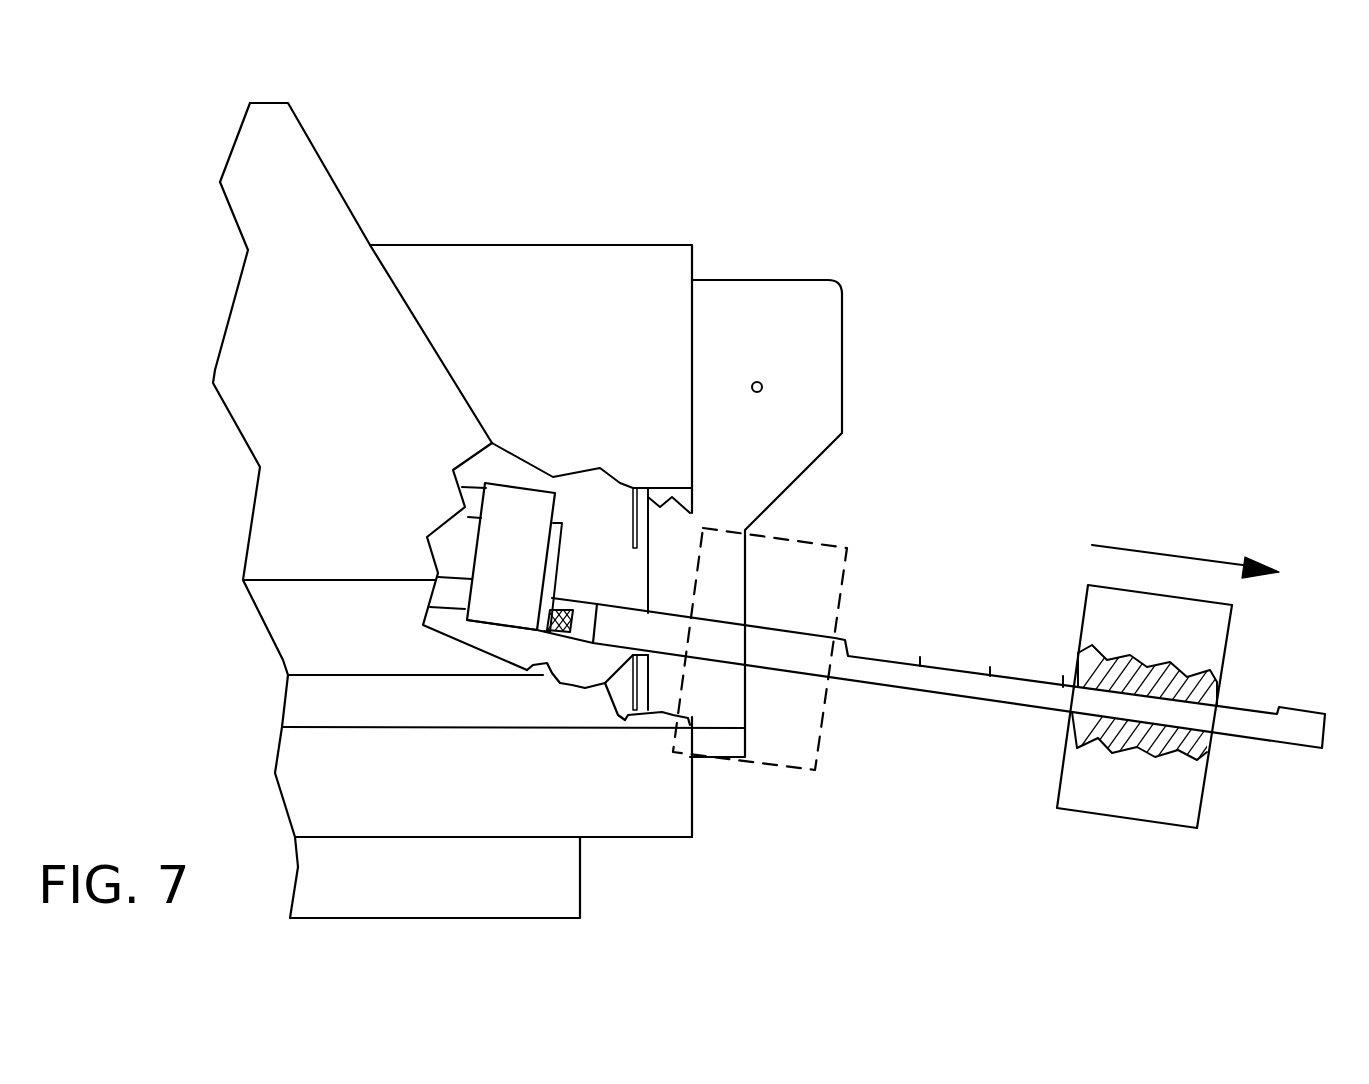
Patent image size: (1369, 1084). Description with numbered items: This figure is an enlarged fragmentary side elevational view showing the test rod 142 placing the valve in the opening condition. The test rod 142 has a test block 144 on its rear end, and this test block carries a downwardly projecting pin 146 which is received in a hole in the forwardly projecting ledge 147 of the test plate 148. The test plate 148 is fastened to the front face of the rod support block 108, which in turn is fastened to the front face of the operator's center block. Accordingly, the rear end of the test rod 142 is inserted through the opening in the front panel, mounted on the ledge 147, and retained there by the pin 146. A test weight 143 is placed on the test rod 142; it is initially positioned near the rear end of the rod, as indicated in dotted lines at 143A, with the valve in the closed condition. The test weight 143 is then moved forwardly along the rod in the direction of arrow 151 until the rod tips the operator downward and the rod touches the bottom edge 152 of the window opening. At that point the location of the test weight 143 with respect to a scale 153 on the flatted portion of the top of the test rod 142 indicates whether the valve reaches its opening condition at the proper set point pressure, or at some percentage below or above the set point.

The rod support block 108 is at (628, 363).
The test rod 142 is at (959, 703).
The test weight 143 is at (1158, 759).
The test weight (dotted position) 143A is at (851, 724).
The test block 144 is at (808, 442).
The pin 146 is at (524, 675).
The ledge 147 is at (540, 712).
The test plate 148 is at (769, 386).
The arrow 151 is at (1208, 504).
The bottom edge of window opening 152 is at (664, 763).
The scale 153 is at (1052, 531).